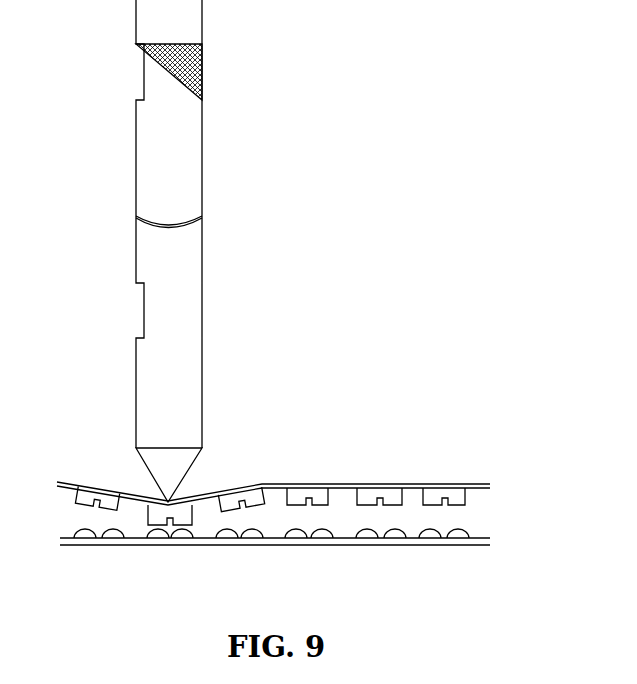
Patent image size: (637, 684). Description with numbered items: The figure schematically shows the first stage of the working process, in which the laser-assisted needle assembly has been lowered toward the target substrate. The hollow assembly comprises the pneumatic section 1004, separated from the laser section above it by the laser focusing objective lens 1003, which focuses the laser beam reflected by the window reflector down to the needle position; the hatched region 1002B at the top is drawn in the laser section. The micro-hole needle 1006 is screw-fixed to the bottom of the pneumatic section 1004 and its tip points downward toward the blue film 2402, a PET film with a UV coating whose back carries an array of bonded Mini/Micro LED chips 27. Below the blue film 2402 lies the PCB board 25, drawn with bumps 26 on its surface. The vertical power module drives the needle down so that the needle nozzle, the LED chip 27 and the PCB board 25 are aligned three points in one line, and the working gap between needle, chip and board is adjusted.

The nozzle tip portion (hatched) 1002B is at (203, 90).
The laser focusing objective lens 1003 is at (175, 223).
The pneumatic section 1004 is at (170, 273).
The micro-hole needle 1006 is at (173, 480).
The blue film 2402 is at (59, 484).
The PCB board 25 is at (211, 538).
The bumps 26 is at (292, 535).
The Mini/Micro LED chip 27 is at (375, 495).